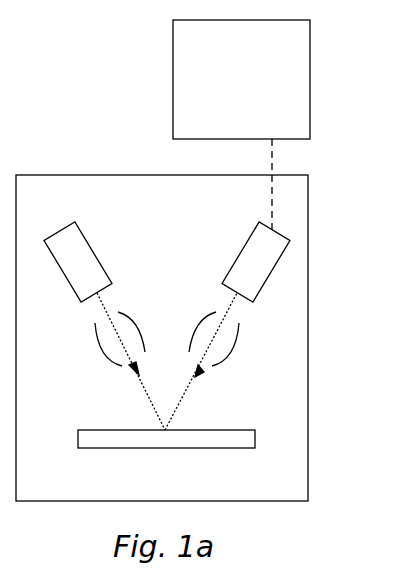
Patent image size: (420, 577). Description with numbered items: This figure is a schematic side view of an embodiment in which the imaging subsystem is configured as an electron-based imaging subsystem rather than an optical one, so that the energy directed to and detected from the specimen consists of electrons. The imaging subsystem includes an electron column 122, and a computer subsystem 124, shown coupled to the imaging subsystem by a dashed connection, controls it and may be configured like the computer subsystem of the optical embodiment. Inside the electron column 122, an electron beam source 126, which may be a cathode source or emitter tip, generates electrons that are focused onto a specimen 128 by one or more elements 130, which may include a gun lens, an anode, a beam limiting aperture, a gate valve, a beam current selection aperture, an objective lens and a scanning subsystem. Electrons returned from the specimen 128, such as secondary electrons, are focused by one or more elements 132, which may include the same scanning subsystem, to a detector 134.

The electron column 122 is at (195, 338).
The computer subsystem 124 is at (223, 120).
The electron beam source 126 is at (95, 255).
The specimen 128 is at (182, 423).
The one or more elements 130 is at (103, 361).
The one or more elements 132 is at (231, 361).
The detector 134 is at (236, 255).